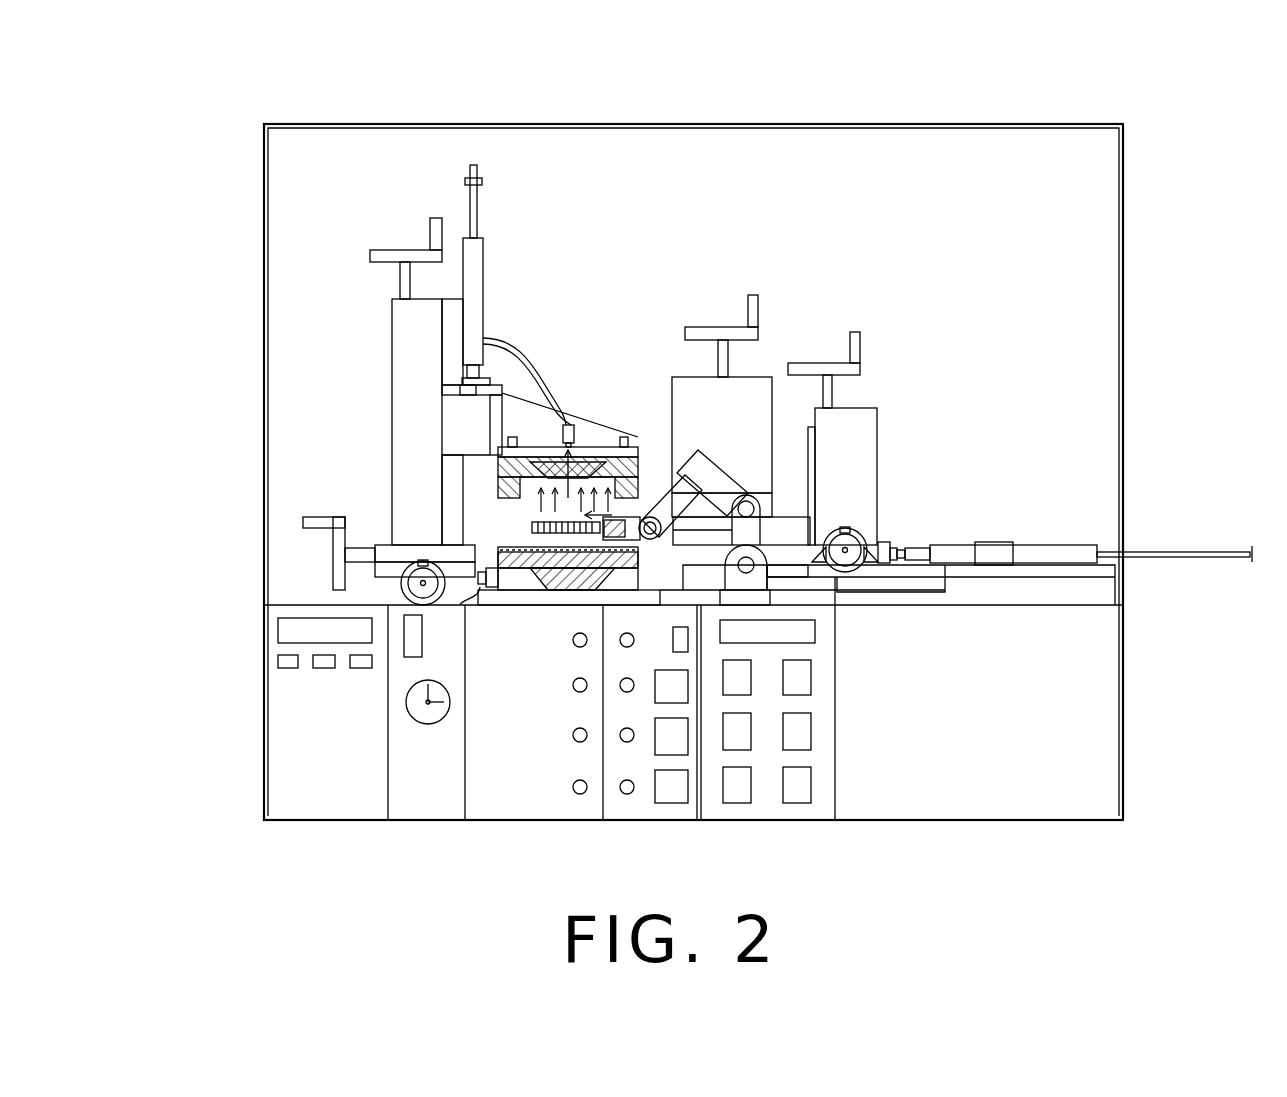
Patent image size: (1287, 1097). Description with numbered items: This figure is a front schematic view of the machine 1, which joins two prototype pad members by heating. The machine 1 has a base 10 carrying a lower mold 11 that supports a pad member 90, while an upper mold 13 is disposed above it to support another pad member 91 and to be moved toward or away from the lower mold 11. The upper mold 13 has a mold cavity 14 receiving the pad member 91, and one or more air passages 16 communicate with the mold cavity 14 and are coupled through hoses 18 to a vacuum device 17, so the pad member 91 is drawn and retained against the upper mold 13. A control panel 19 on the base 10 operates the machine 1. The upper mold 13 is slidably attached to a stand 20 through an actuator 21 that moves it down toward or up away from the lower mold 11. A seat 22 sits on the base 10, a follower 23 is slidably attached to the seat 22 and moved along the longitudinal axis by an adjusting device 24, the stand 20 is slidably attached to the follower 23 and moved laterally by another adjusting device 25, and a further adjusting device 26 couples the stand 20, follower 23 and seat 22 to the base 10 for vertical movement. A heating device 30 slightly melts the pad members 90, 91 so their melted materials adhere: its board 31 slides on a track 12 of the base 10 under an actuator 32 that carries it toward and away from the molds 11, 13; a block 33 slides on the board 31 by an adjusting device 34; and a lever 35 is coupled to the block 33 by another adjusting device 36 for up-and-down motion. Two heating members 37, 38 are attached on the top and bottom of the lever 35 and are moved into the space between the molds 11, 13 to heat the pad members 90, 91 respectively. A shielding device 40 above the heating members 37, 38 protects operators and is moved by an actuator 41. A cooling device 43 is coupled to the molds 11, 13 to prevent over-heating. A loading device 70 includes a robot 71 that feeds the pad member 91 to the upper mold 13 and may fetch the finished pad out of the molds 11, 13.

The machine 1 is at (1088, 223).
The base 10 is at (1100, 712).
The lower mold 11 is at (548, 570).
The track 12 is at (917, 587).
The upper mold 13 is at (588, 450).
The mold cavity 14 is at (498, 495).
The air passage 16 is at (518, 458).
The vacuum device 17 is at (423, 812).
The hose 18 is at (530, 365).
The control panel 19 is at (737, 812).
The stand 20 is at (398, 327).
The actuator 21 is at (483, 273).
The seat 22 is at (383, 571).
The follower 23 is at (388, 549).
The adjusting device 24 is at (407, 590).
The adjusting device 25 is at (345, 560).
The adjusting device 26 is at (398, 255).
The heating device 30 is at (814, 268).
The board 31 is at (878, 562).
The actuator 32 is at (1055, 552).
The block 33 is at (865, 440).
The adjusting device 34 is at (850, 530).
The lever 35 is at (803, 542).
The adjusting device 36 is at (821, 437).
The heating member 37 is at (692, 508).
The heating member 38 is at (780, 540).
The shielding device 40 is at (772, 492).
The actuator 41 is at (720, 332).
The cooling device 43 is at (325, 812).
The loading device 70 is at (718, 497).
The robot 71 is at (650, 547).
The pad member 90 is at (570, 568).
The pad member 91 is at (536, 566).